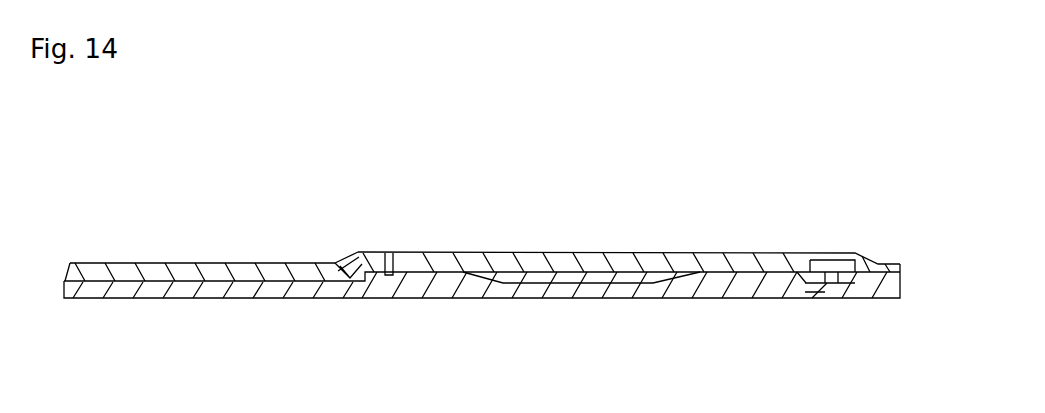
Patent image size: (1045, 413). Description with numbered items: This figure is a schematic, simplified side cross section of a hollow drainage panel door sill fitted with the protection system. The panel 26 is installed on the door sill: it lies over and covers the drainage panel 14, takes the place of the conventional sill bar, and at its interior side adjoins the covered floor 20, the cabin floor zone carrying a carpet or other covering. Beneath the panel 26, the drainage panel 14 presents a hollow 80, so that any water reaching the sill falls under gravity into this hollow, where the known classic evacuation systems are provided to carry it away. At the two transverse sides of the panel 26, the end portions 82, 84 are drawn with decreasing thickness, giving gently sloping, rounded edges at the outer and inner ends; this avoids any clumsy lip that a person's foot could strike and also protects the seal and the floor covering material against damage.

The drainage panel 14 is at (645, 292).
The covered floor 20 is at (201, 263).
The panel 26 is at (591, 253).
The hollow 80 is at (533, 282).
The end portion 82 is at (873, 262).
The end portion 84 is at (350, 255).